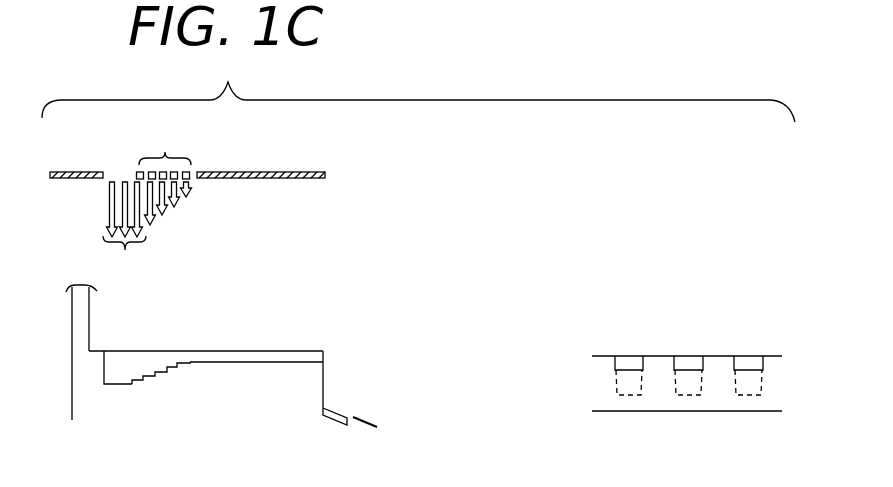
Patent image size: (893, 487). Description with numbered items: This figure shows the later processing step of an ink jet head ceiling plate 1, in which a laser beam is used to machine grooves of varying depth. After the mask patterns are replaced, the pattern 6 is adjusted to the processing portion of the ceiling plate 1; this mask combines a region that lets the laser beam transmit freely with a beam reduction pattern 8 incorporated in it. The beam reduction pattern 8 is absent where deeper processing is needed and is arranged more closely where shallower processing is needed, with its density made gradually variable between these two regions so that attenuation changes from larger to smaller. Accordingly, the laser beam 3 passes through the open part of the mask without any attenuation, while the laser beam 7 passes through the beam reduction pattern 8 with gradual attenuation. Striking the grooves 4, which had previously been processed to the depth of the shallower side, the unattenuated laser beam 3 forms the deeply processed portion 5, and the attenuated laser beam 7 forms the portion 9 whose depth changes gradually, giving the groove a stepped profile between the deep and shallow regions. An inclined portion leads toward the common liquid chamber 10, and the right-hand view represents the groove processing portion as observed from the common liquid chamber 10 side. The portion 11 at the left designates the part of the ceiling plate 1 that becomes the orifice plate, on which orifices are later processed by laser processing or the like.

The ceiling plate 1 is at (312, 380).
The laser beam 3 is at (124, 231).
The grooves 4 is at (286, 352).
The deeply processed portion 5 is at (125, 377).
The pattern 6 is at (285, 172).
The attenuated laser beam 7 is at (204, 197).
The beam reduction pattern 8 is at (164, 153).
The gradually changing depth portion 9 is at (163, 373).
The common liquid chamber 10 is at (358, 408).
The orifice plate portion 11 is at (75, 314).